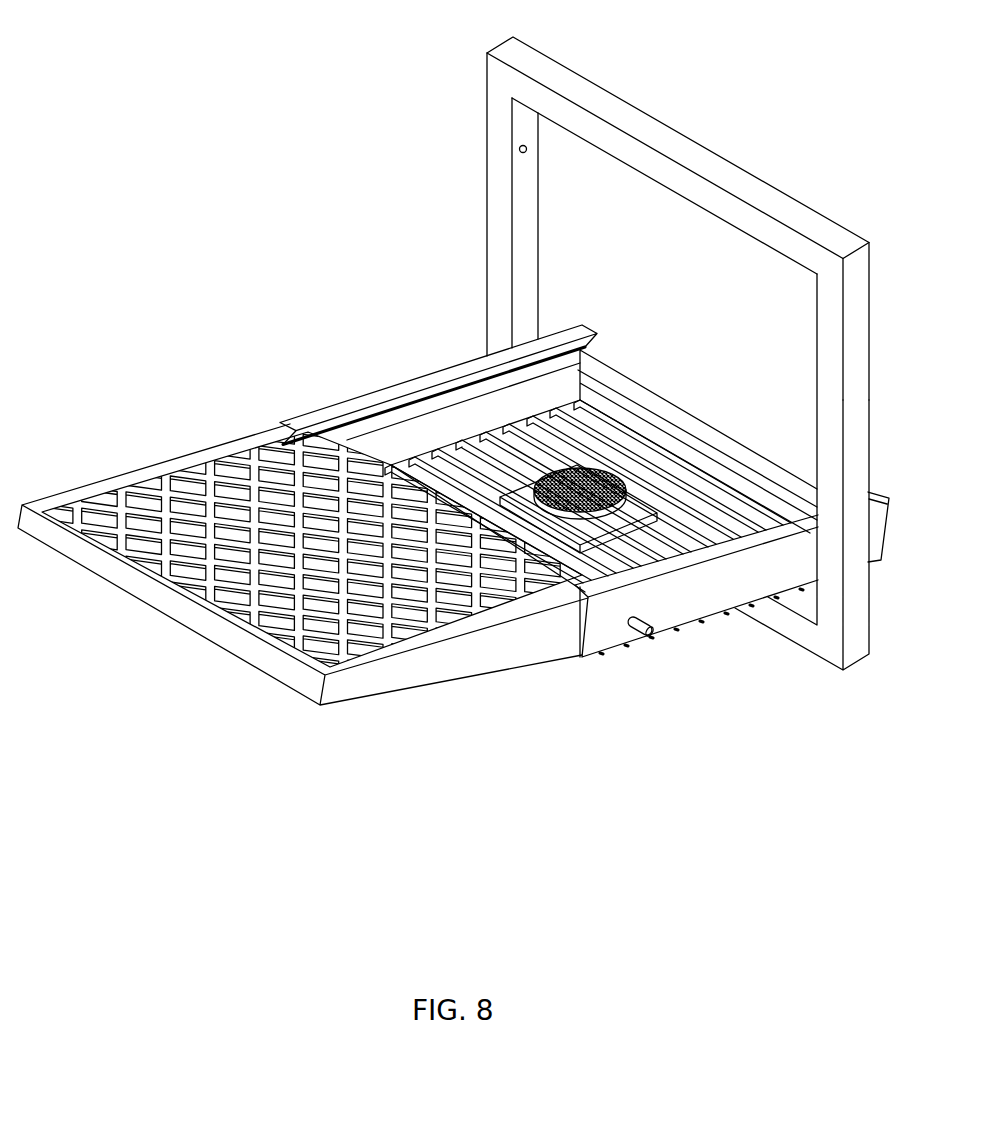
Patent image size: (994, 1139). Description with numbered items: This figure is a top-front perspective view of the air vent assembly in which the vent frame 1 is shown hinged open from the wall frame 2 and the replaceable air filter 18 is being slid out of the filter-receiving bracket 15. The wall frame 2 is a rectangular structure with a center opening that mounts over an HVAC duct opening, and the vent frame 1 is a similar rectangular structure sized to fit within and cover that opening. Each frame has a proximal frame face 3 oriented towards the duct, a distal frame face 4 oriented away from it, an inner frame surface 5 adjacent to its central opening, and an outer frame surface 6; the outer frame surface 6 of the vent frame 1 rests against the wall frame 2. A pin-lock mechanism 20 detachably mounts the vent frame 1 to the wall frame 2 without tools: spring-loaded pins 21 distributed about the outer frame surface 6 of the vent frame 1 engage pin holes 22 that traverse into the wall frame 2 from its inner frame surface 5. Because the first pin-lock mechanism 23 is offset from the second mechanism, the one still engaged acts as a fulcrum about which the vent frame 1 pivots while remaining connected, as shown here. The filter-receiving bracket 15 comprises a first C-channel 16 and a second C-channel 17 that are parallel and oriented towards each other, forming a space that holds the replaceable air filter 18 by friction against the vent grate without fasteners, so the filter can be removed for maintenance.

The vent frame 1 is at (601, 543).
The wall frame 2 is at (678, 344).
The proximal frame face 3 is at (838, 232).
The distal frame face 4 is at (757, 220).
The inner frame surface 5 is at (530, 283).
The outer frame surface 6 is at (730, 172).
The filter-receiving bracket 15 is at (614, 426).
The first C-channel 16 is at (585, 326).
The second C-channel 17 is at (872, 492).
The replaceable air filter 18 is at (340, 690).
The pin-lock mechanism 20 is at (595, 178).
The spring-loaded pins 21 is at (691, 675).
The pin holes 22 is at (530, 154).
The first pin-lock mechanism 23 is at (652, 640).